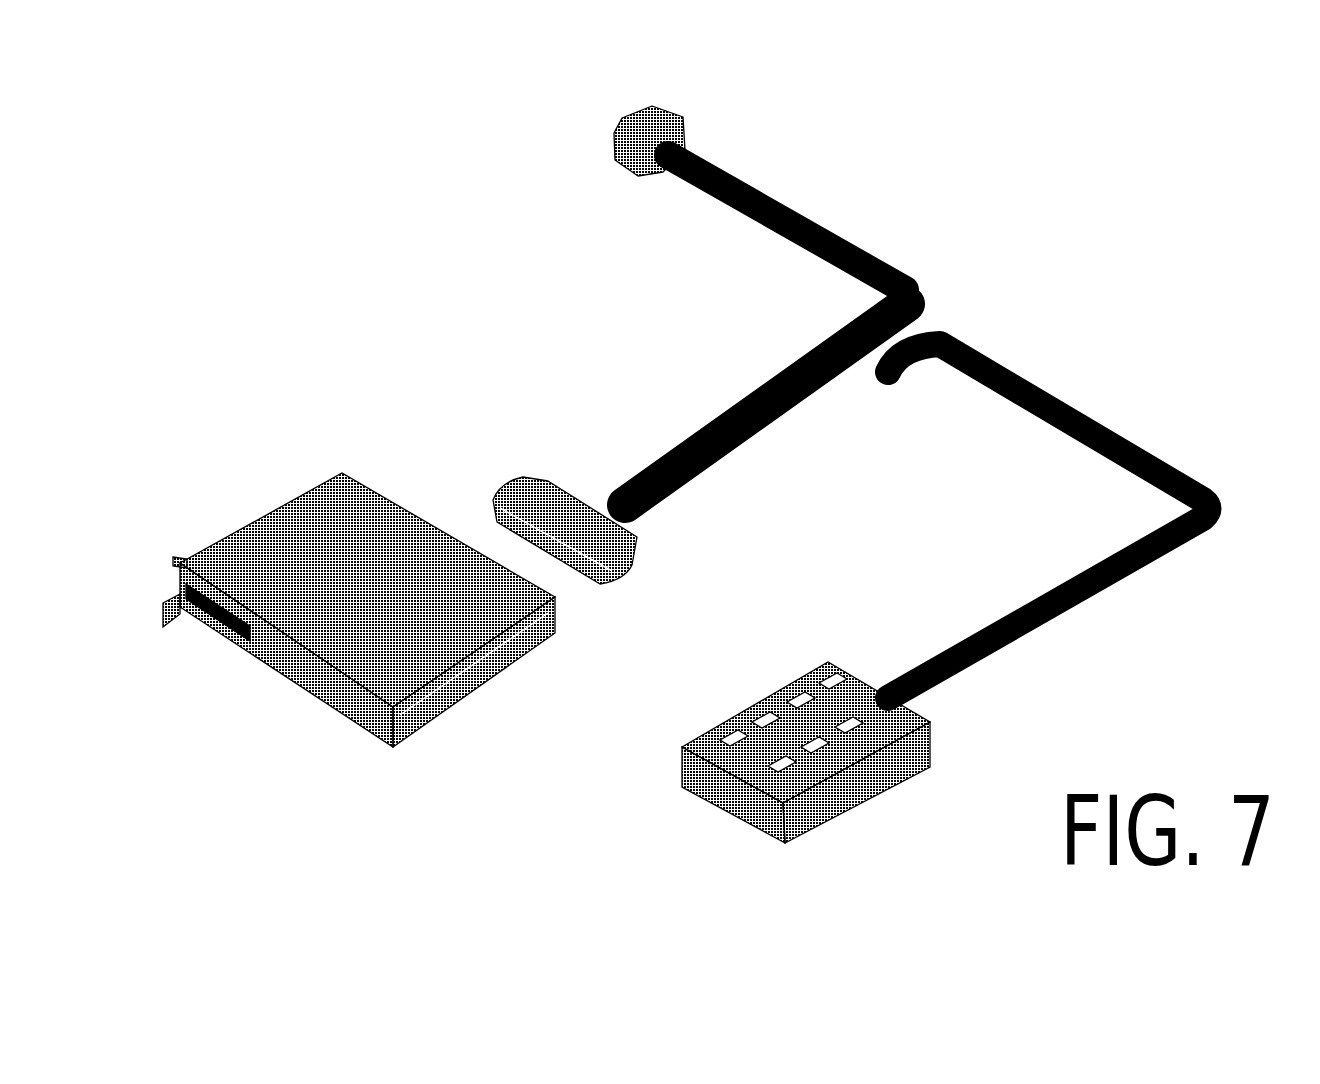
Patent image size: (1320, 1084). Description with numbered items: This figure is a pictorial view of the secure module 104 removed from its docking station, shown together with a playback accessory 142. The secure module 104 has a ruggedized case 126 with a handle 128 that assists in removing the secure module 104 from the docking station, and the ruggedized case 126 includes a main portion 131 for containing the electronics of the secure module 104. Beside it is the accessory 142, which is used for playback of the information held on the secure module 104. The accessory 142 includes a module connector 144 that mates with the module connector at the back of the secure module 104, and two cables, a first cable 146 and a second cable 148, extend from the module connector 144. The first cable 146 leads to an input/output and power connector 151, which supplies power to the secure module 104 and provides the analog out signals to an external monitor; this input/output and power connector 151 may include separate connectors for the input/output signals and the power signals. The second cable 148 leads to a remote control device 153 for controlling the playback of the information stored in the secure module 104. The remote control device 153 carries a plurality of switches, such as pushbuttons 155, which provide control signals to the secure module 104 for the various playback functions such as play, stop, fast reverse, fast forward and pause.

The secure module 104 is at (333, 618).
The ruggedized case 126 is at (359, 618).
The handle 128 is at (358, 735).
The main portion 131 is at (373, 547).
The accessory 142 is at (851, 484).
The module connector 144 is at (640, 547).
The first cable 146 is at (710, 197).
The second cable 148 is at (978, 372).
The input/output and power connector 151 is at (672, 116).
The remote control device 153 is at (888, 797).
The pushbuttons 155 is at (820, 748).